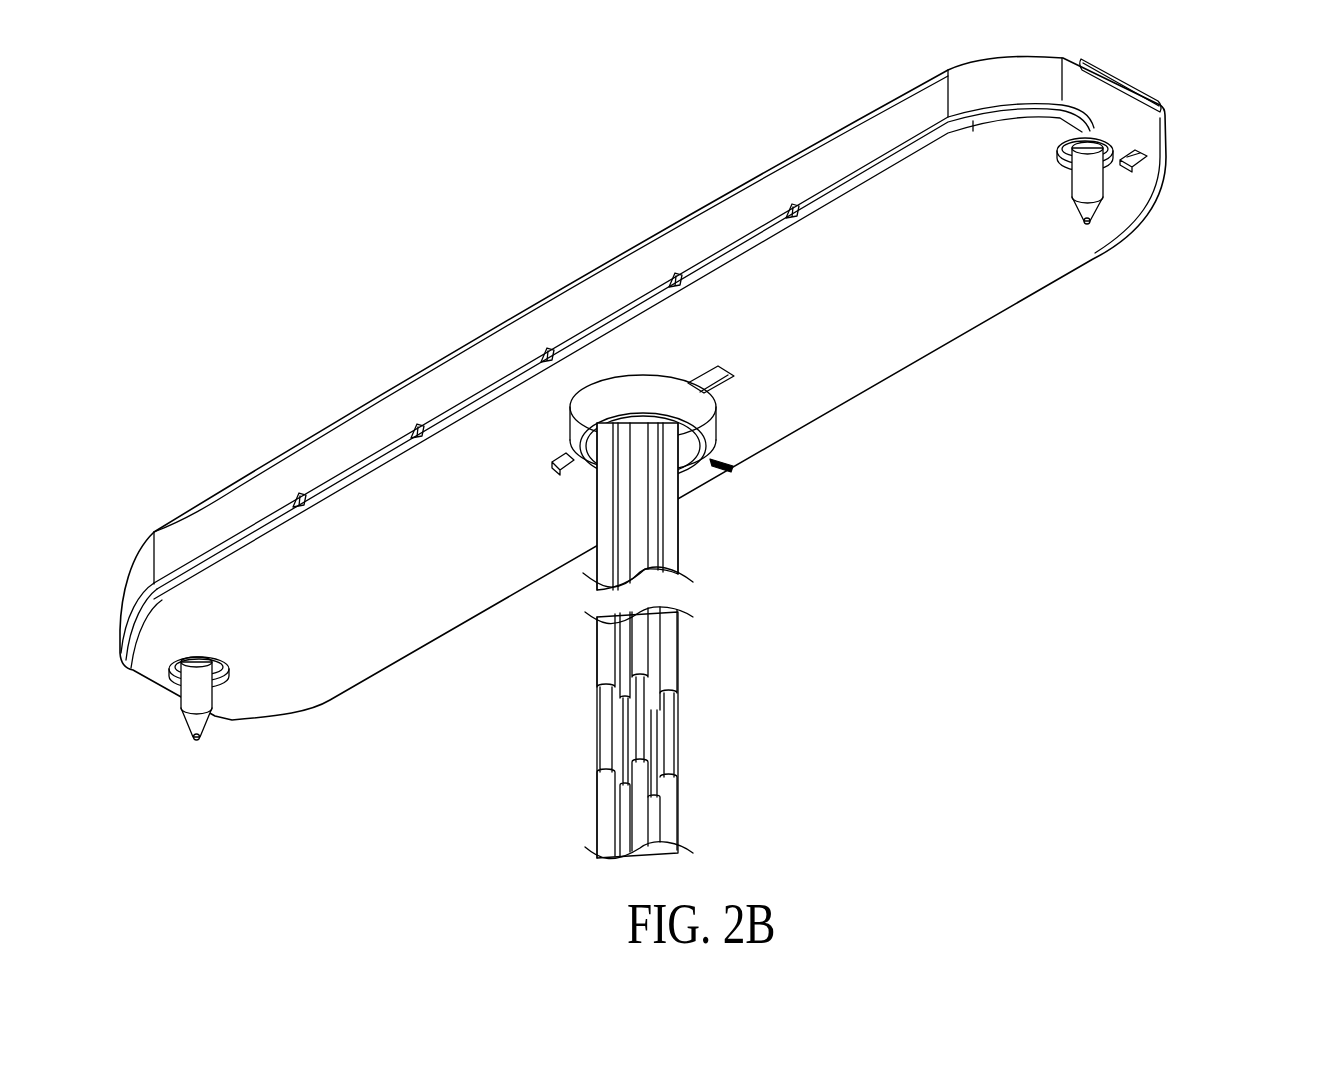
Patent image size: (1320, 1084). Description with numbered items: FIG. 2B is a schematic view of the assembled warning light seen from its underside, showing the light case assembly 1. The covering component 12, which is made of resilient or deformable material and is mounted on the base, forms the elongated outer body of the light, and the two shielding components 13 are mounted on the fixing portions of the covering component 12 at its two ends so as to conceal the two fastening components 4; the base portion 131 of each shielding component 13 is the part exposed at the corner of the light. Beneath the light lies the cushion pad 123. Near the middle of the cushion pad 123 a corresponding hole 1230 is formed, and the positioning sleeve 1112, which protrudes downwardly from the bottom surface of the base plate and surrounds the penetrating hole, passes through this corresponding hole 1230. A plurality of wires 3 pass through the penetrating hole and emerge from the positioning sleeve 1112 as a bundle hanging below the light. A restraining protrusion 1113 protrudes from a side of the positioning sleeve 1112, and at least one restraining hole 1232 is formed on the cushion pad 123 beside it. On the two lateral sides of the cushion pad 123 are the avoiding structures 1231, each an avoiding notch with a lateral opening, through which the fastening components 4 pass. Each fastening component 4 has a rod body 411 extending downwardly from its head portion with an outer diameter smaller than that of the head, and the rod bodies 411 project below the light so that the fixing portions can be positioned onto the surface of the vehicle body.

The light case assembly 1 is at (415, 302).
The covering component 12 is at (467, 368).
The positioning sleeve 1112 is at (598, 400).
The restraining protrusion 1113 is at (708, 375).
The cushion pad 123 is at (427, 618).
The corresponding hole 1230 is at (713, 425).
The restraining hole 1232 is at (560, 470).
The shielding component 13 is at (1188, 85).
The base portion 131 is at (1215, 74).
The avoiding structure 1231 is at (1137, 162).
The fastening component 4 is at (699, 510).
The rod body 411 is at (1090, 183).
The wires 3 is at (665, 538).